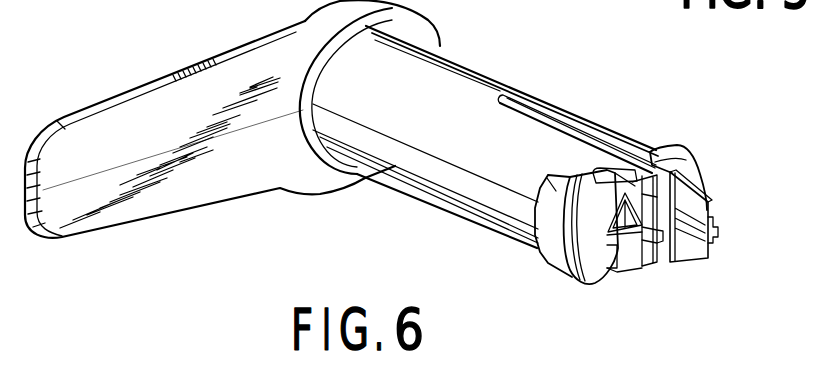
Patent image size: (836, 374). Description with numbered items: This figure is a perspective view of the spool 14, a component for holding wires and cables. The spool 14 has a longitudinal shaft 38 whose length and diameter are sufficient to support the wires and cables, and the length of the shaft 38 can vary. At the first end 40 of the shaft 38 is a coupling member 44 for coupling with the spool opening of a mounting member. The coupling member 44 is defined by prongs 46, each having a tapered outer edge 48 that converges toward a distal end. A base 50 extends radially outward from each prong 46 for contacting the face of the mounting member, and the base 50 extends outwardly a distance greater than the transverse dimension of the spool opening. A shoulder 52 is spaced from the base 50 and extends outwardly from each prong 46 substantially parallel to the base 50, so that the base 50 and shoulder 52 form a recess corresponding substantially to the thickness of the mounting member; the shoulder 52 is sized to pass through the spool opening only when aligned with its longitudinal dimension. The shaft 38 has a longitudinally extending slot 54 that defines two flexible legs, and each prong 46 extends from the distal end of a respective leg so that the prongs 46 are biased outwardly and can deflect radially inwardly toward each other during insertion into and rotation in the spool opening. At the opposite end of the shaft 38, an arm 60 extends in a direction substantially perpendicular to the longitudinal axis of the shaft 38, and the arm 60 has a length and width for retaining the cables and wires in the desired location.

The spool 14 is at (393, 255).
The longitudinal shaft 38 is at (476, 56).
The first end 40 is at (660, 270).
The coupling member 44 is at (724, 218).
The prongs 46 is at (705, 258).
The tapered outer edge 48 is at (620, 272).
The base 50 is at (578, 278).
The shoulder 52 is at (608, 228).
The longitudinally extending slot 54 is at (606, 145).
The arm 60 is at (163, 217).